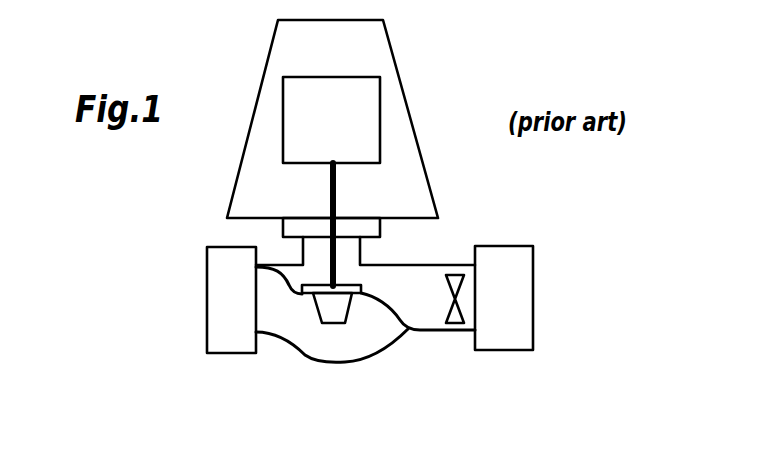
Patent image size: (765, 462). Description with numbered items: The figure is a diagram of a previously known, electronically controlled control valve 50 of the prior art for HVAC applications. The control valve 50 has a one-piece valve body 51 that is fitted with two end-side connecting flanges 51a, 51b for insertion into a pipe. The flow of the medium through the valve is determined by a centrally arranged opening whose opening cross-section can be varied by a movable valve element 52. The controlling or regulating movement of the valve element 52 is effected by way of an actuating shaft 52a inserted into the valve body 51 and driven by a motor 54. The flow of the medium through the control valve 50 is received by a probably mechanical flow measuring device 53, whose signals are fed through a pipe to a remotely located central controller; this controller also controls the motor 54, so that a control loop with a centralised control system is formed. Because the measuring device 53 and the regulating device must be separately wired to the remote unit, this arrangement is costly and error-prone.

The control valve 50 is at (184, 193).
The valve body 51 is at (370, 358).
The connecting flange 51a is at (220, 313).
The connecting flange 51b is at (515, 322).
The valve element 52 is at (332, 305).
The actuating shaft 52a is at (335, 200).
The flow measuring device 53 is at (460, 283).
The motor 54 is at (340, 129).